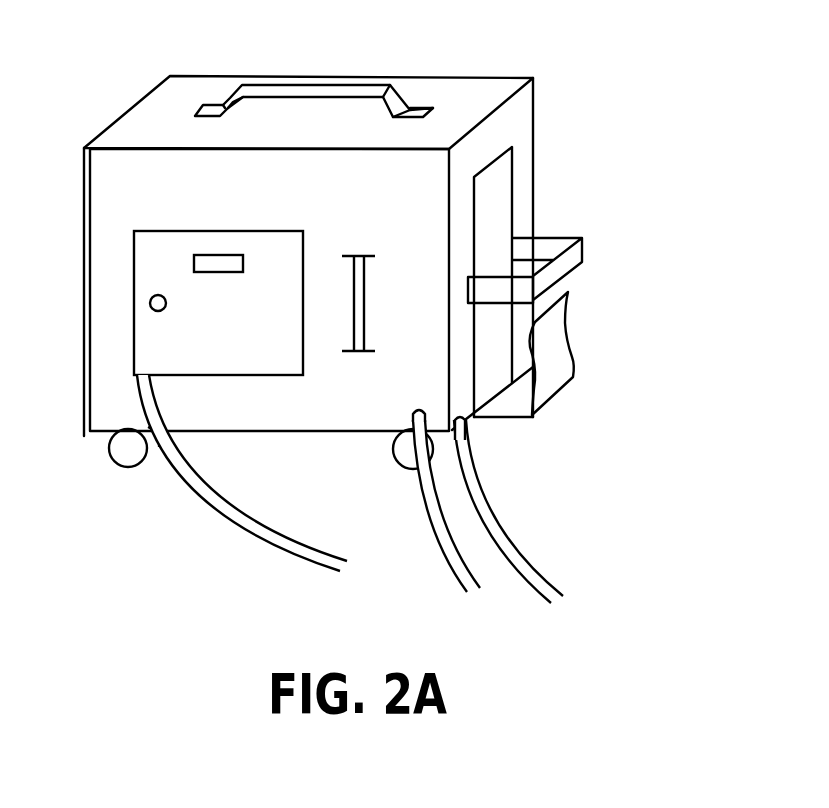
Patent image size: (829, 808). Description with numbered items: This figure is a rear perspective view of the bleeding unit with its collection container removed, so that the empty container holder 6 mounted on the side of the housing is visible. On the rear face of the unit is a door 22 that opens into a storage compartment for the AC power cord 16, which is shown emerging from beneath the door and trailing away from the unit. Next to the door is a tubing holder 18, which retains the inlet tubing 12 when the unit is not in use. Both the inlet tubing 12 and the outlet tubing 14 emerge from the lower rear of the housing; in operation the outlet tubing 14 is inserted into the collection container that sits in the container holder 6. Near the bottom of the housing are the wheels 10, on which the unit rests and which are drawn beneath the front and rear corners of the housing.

The container holder 6 is at (578, 332).
The wheels 10 is at (108, 460).
The inlet tubing 12 is at (417, 517).
The outlet tubing 14 is at (500, 517).
The AC power cord 16 is at (220, 510).
The tubing holder 18 is at (368, 307).
The door 22 is at (172, 223).